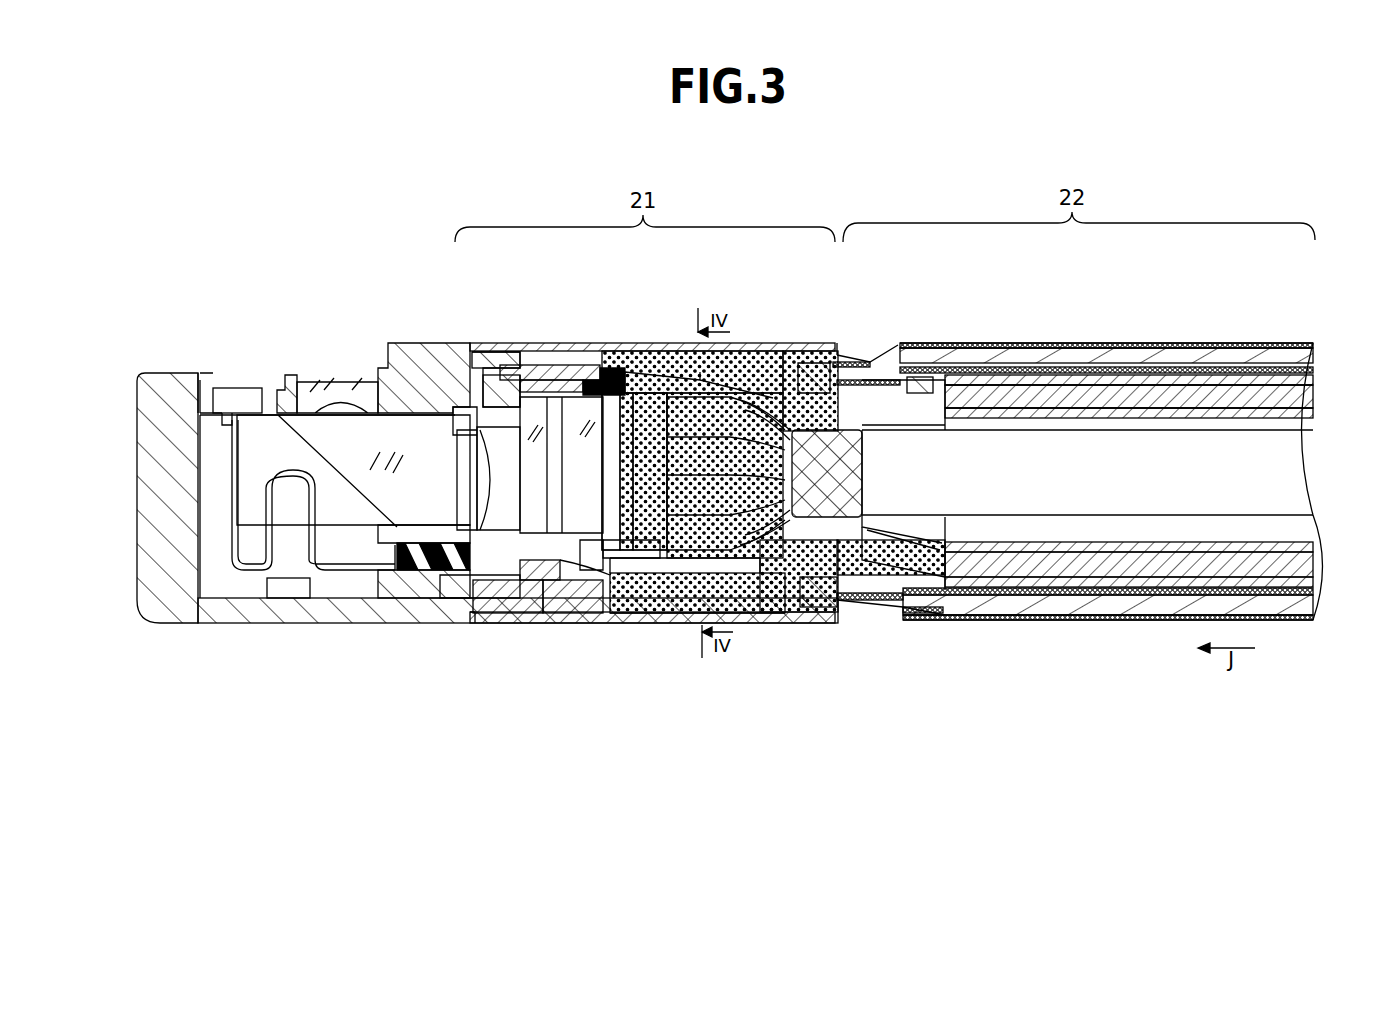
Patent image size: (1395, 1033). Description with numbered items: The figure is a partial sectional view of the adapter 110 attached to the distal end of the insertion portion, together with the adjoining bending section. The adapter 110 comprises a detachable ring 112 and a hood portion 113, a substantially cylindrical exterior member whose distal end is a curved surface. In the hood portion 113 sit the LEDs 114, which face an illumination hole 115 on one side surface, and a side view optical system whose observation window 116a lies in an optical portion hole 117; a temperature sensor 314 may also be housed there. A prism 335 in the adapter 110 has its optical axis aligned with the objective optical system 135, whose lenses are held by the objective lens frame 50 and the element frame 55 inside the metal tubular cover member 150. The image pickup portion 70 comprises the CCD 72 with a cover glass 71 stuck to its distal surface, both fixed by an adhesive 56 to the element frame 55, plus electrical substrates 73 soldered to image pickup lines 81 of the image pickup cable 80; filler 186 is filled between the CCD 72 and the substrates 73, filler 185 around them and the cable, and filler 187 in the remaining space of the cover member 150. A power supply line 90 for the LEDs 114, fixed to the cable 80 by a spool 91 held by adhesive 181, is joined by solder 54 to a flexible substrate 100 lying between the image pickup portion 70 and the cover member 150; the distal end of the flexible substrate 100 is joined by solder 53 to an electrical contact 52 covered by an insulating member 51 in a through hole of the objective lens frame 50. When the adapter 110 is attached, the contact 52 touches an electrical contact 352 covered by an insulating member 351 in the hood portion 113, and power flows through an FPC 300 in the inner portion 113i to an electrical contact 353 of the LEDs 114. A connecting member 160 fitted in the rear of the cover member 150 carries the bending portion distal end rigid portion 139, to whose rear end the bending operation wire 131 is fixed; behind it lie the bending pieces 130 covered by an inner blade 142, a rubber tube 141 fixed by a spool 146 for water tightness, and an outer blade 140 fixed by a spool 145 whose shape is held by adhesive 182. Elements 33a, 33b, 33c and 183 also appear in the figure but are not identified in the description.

The lens holder 33a is at (478, 368).
The spacer ring 33b is at (555, 380).
The outer housing 33c is at (500, 343).
The objective lens frame 50 is at (533, 473).
The insulating member 51 is at (497, 612).
The electrical contact 52 is at (548, 590).
The solder 53 is at (575, 598).
The solder 54 is at (792, 560).
The element frame 55 is at (519, 365).
The adhesive 56 is at (600, 385).
The image pickup portion 70 is at (649, 394).
The cover glass 71 is at (613, 393).
The image pickup device 72 is at (640, 393).
The electrical substrates 73 is at (678, 393).
The image pickup cable 80 is at (1063, 480).
The image pickup lines 81 is at (776, 435).
The power supply line 90 is at (885, 595).
The spool 91 is at (925, 600).
The flexible substrate 100 is at (698, 600).
The adapter 110 is at (148, 620).
The detachable ring 112 is at (520, 618).
The hood portion 113 is at (262, 613).
The inner portion 113i is at (213, 553).
The LEDs 114 is at (262, 388).
The illumination hole 115 is at (213, 375).
The observation window 116a is at (291, 390).
The optical portion hole 117 is at (345, 377).
The bending pieces 130 is at (1165, 620).
The bending operation wire 131 is at (1295, 395).
The objective optical system 135 is at (470, 487).
The bending portion distal end rigid portion 139 is at (893, 375).
The outer blade 140 is at (1050, 376).
The rubber tube 141 is at (1135, 385).
The inner blade 142 is at (1200, 368).
The spool 145 is at (856, 378).
The spool 146 is at (921, 376).
The cover member 150 is at (660, 605).
The connecting member 160 is at (828, 350).
The adhesive 181 is at (970, 600).
The adhesive 182 is at (855, 605).
The shield member 183 is at (610, 600).
The filler 185 is at (822, 615).
The filler 186 is at (735, 400).
The filler 187 is at (642, 620).
The FPC 300 is at (230, 600).
The temperature sensor 314 is at (295, 600).
The prism 335 is at (350, 497).
The insulating member 351 is at (425, 598).
The electrical contact 352 is at (395, 572).
The electrical contact 353 is at (228, 413).